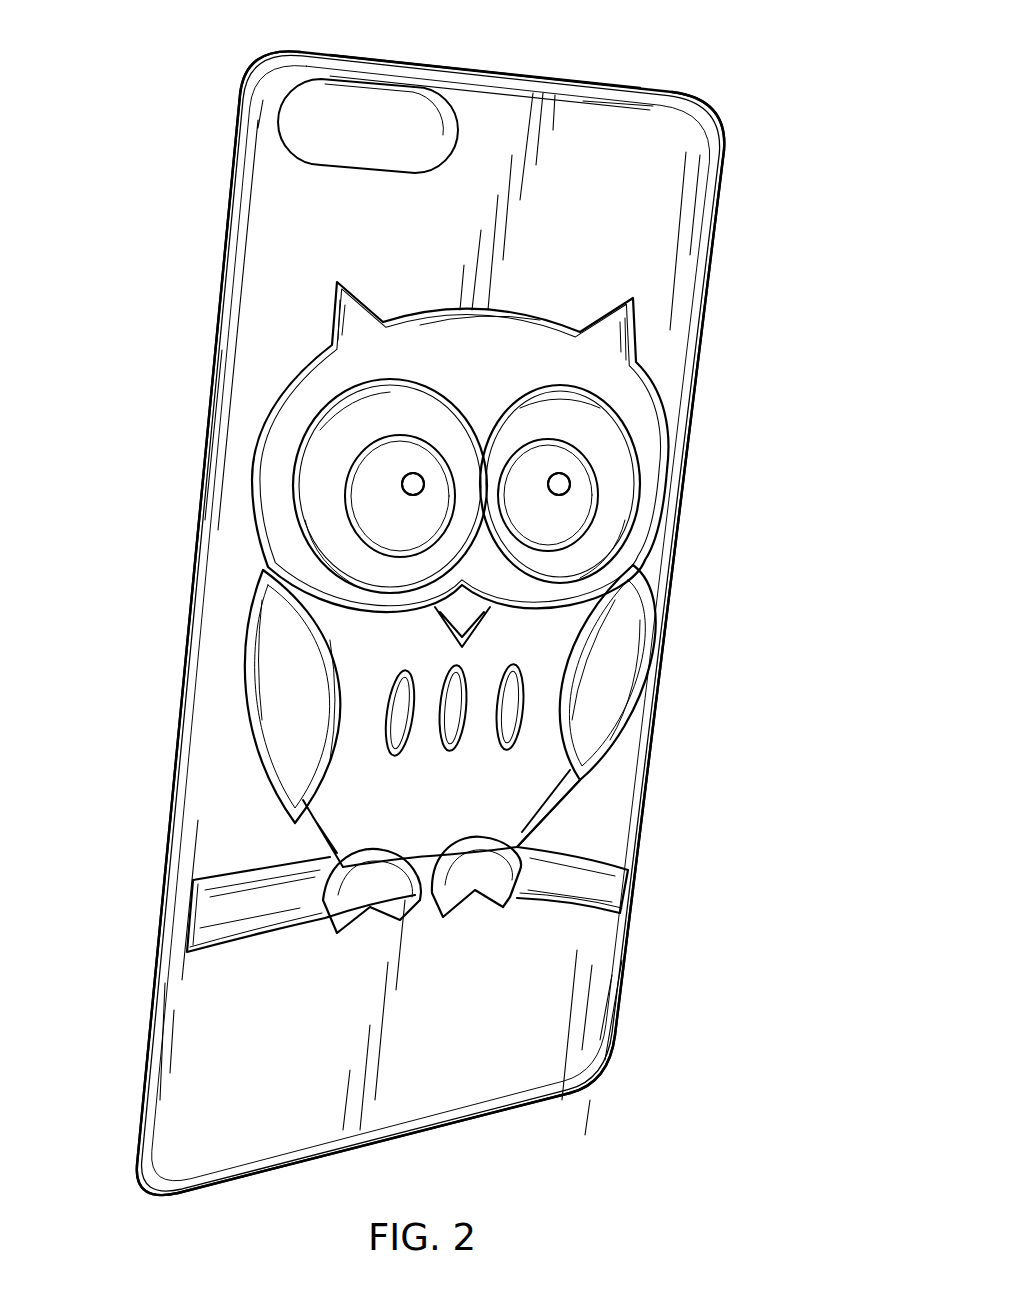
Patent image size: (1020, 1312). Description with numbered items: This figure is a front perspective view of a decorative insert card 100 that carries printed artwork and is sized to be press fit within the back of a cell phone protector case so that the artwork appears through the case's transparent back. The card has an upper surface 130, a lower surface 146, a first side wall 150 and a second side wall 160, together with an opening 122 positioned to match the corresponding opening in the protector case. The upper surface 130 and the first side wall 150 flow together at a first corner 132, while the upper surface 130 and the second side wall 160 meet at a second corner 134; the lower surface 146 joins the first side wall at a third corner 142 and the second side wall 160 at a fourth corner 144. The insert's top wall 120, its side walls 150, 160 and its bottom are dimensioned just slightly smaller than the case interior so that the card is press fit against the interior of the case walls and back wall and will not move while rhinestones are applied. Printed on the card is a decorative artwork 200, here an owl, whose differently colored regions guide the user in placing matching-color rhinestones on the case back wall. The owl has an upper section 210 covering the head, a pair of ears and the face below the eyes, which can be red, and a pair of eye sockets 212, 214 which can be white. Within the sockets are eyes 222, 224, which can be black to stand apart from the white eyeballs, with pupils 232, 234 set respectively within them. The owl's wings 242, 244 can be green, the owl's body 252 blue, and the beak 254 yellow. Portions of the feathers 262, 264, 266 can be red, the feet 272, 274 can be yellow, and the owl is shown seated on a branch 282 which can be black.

The decorative insert card 100 is at (748, 30).
The top wall 120 is at (630, 229).
The opening 122 is at (393, 141).
The upper surface 130 is at (608, 88).
The first corner 132 is at (262, 72).
The second corner 134 is at (719, 120).
The third corner 142 is at (140, 1160).
The fourth corner 144 is at (604, 1070).
The lower surface 146 is at (510, 1126).
The first side wall 150 is at (186, 585).
The second side wall 160 is at (676, 542).
The decorative artwork 200 is at (560, 632).
The upper section 210 is at (506, 371).
The owl's eye socket 212 is at (414, 431).
The owl's eye socket 214 is at (583, 436).
The eye 222 is at (420, 531).
The eye 224 is at (568, 526).
The pupil 232 is at (405, 488).
The pupil 234 is at (565, 488).
The owl's wing 242 is at (270, 718).
The owl's wing 244 is at (598, 698).
The owl's body 252 is at (557, 752).
The owl's beak 254 is at (440, 620).
The owl's feather portion 262 is at (390, 760).
The owl's feather portion 264 is at (447, 755).
The owl's feather portion 266 is at (503, 752).
The owl's foot 272 is at (343, 915).
The owl's foot 274 is at (480, 895).
The branch 282 is at (190, 910).